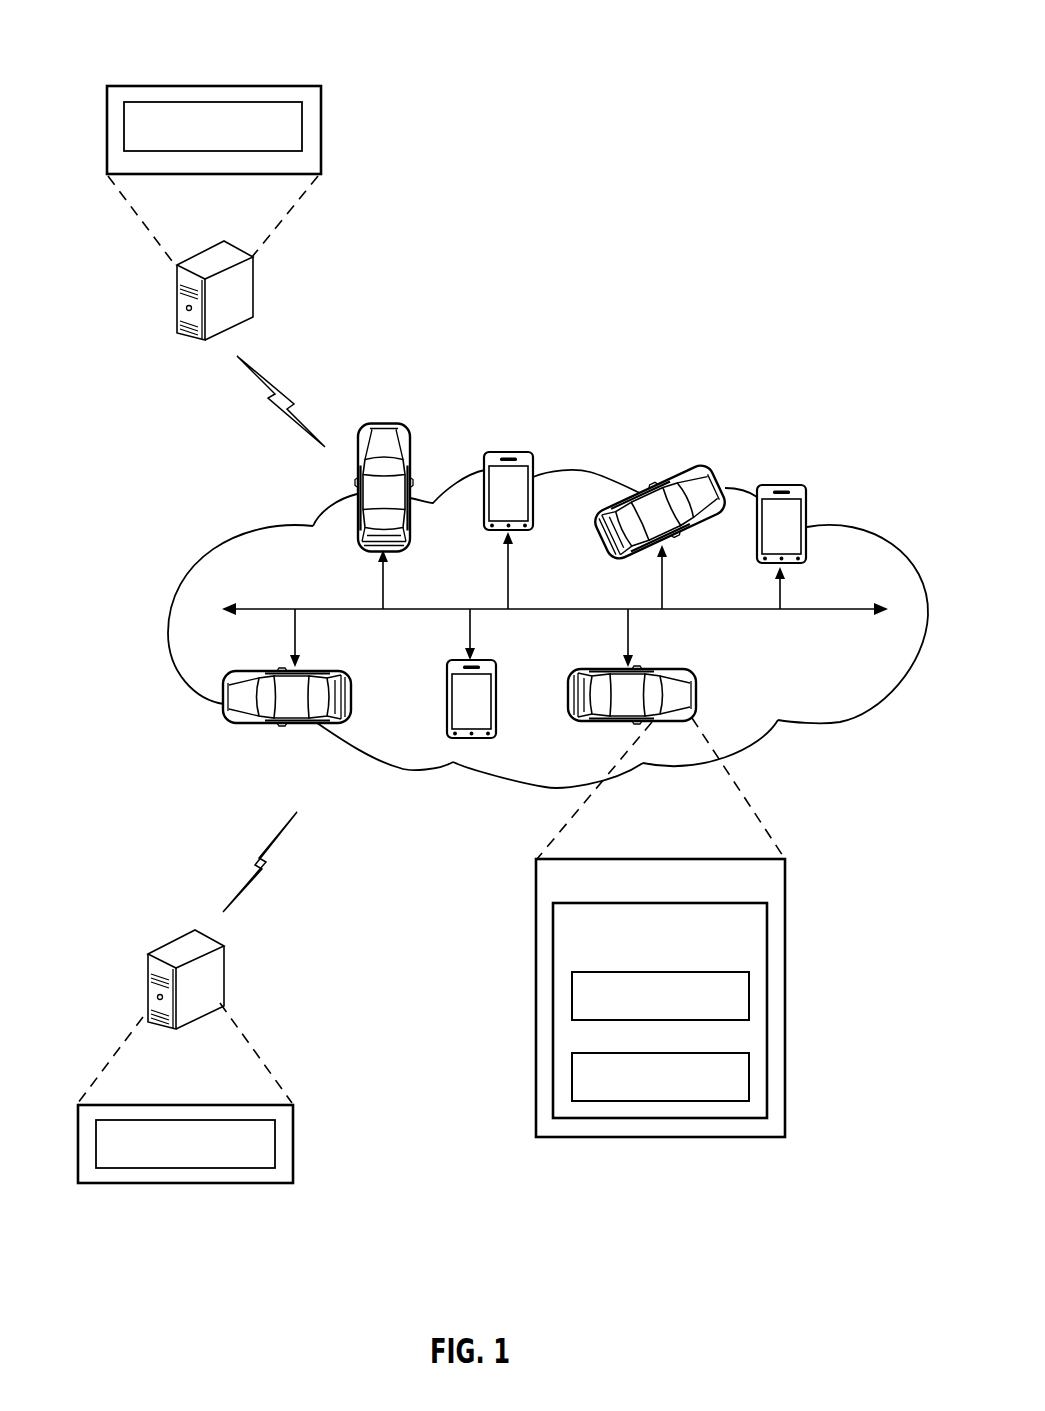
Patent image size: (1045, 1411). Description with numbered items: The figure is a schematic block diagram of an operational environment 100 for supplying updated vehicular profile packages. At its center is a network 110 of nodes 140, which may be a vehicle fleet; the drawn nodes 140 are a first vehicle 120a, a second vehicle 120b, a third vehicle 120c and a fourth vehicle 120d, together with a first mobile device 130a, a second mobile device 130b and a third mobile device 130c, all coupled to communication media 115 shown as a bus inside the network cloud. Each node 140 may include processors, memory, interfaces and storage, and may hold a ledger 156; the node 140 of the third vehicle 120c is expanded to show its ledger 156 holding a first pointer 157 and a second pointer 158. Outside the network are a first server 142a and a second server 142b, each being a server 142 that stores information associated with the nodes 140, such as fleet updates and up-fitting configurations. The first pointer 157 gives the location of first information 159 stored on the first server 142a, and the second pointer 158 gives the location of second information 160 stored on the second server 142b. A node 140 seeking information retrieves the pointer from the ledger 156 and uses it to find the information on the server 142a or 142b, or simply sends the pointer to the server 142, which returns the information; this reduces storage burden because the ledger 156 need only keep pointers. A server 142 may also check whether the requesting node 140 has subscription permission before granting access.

The operational environment 100 is at (841, 76).
The network 110 is at (227, 494).
The communication media 115 is at (340, 607).
The first vehicle 120a is at (383, 422).
The second vehicle 120b is at (682, 468).
The third vehicle 120c is at (662, 670).
The fourth vehicle 120d is at (247, 722).
The first mobile device 130a is at (510, 452).
The second mobile device 130b is at (798, 485).
The third mobile device 130c is at (483, 740).
The node 140 is at (518, 761).
The server 142 is at (177, 293).
The first server 142a is at (230, 187).
The second server 142b is at (203, 1063).
The ledger 156 is at (627, 902).
The first pointer 157 is at (749, 998).
The second pointer 158 is at (749, 1072).
The first information 159 is at (124, 127).
The second information 160 is at (96, 1148).